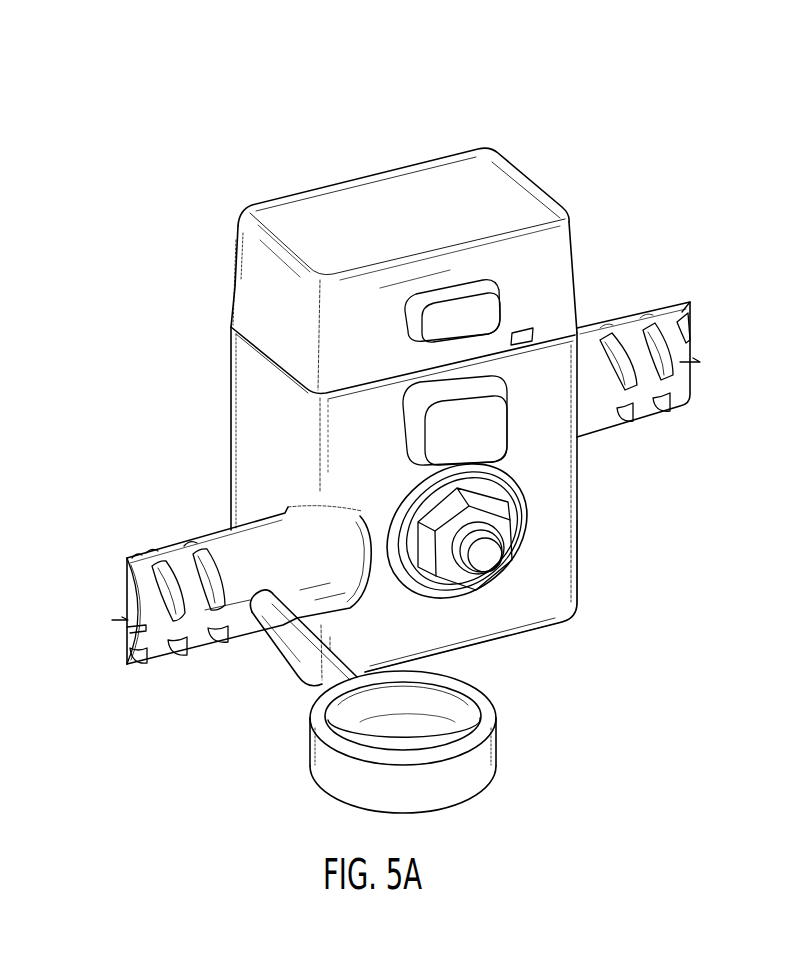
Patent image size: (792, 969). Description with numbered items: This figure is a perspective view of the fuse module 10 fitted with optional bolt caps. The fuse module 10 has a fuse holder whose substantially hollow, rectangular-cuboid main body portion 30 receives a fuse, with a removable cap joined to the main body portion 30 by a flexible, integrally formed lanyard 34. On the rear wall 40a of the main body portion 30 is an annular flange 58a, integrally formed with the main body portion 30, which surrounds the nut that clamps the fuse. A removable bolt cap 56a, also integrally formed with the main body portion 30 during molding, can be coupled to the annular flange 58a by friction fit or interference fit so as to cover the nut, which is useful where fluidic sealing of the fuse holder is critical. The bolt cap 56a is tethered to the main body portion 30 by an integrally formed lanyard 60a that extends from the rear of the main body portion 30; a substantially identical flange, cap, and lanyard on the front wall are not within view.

The fuse module 10 is at (226, 158).
The main body portion 30 is at (257, 417).
The lanyard 34 is at (493, 558).
The annular flange 58a is at (527, 515).
The rear wall 40a is at (523, 600).
The lanyard 60a is at (303, 650).
The bolt cap 56a is at (333, 773).